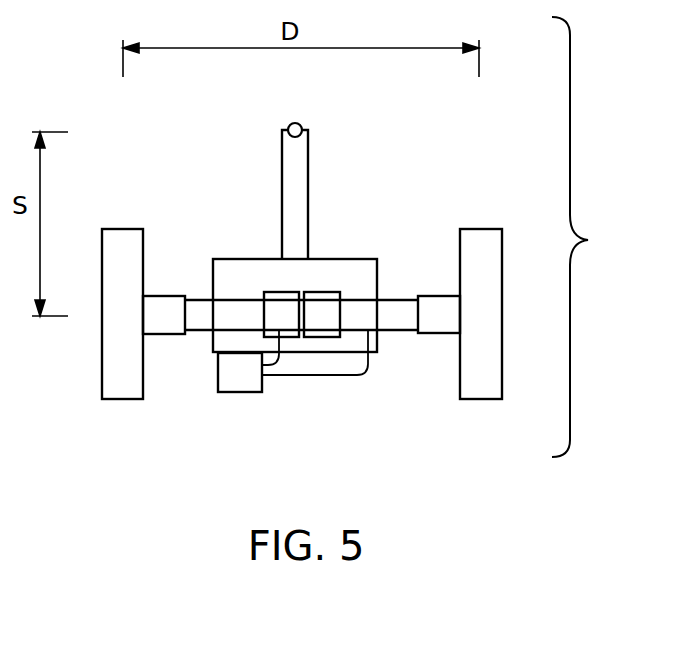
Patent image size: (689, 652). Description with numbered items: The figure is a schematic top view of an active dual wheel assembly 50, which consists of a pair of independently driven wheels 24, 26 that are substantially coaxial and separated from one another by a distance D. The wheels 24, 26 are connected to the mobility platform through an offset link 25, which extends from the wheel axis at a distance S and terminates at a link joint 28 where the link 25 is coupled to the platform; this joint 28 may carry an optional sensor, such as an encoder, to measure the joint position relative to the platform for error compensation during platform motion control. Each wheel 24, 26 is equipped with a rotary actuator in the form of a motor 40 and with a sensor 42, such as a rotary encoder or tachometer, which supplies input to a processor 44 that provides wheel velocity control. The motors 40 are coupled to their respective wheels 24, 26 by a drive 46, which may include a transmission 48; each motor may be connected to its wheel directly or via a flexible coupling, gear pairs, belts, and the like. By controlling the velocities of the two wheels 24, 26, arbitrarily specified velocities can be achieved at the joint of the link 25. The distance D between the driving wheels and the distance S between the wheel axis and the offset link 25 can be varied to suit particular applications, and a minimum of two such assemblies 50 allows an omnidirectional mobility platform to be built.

The wheel 24 is at (100, 373).
The offset link 25 is at (308, 173).
The wheel 26 is at (503, 373).
The link joint 28 is at (290, 124).
The motor 40 is at (394, 336).
The sensor 42 is at (287, 347).
The processor 44 is at (222, 383).
The drive 46 is at (207, 278).
The transmission 48 is at (162, 339).
The active dual wheel assembly 50 is at (588, 237).